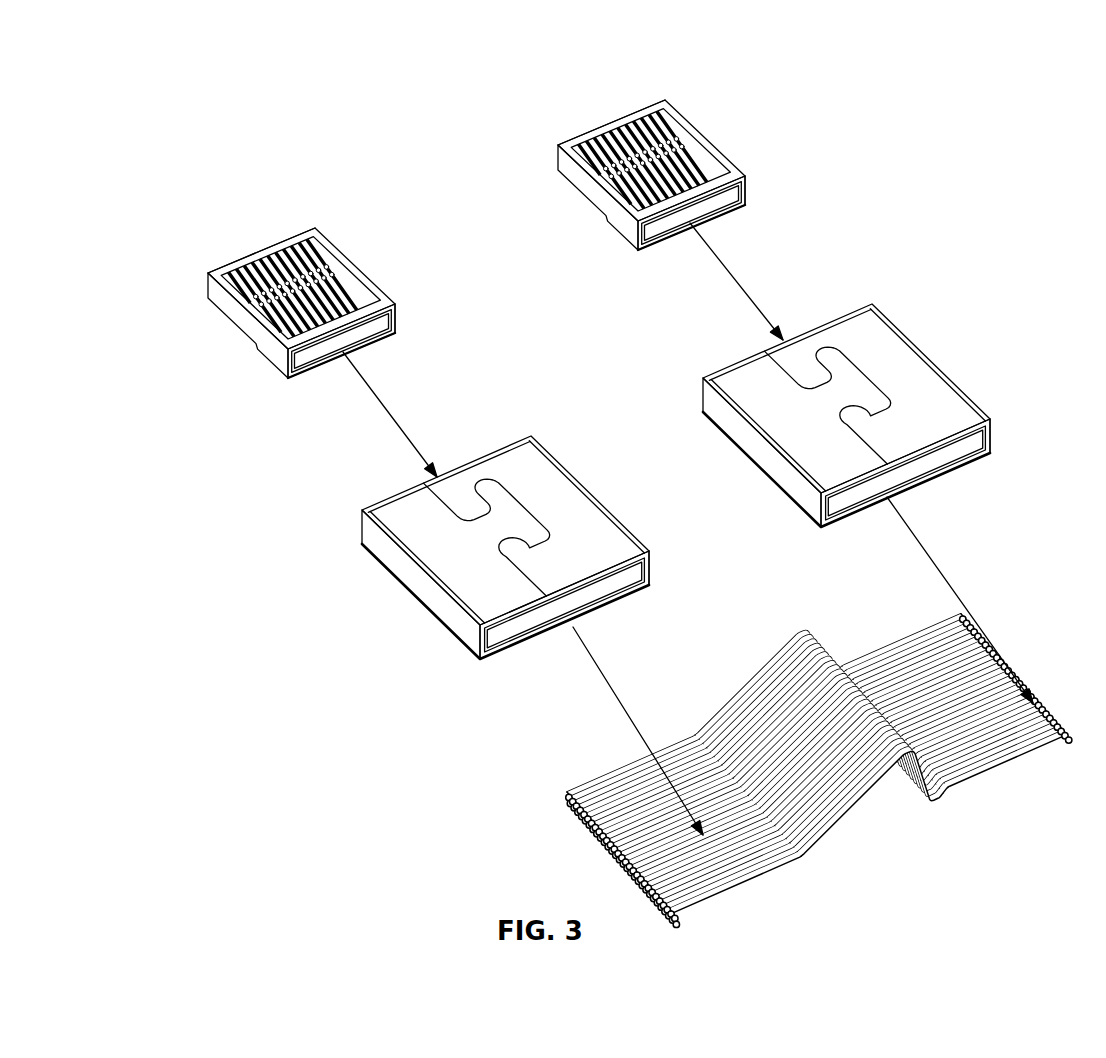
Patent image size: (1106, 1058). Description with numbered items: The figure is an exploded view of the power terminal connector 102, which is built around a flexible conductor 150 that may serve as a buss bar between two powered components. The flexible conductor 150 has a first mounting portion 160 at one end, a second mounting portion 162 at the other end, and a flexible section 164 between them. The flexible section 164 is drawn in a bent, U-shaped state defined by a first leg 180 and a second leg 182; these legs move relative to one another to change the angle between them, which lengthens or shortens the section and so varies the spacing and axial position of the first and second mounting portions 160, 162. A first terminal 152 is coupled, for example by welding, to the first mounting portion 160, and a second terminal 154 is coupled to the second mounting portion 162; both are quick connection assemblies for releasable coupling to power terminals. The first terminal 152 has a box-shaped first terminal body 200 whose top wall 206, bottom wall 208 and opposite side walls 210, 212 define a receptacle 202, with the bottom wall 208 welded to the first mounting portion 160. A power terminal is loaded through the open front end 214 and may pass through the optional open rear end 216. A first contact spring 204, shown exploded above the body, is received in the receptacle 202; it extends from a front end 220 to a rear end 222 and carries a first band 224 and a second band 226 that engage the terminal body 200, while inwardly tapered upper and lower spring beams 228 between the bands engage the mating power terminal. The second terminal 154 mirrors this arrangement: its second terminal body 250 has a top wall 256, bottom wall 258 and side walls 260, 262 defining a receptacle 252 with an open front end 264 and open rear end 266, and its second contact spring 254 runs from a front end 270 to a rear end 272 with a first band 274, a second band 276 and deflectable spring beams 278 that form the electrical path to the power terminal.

The power terminal connector 102 is at (580, 485).
The flexible conductor 150 is at (793, 755).
The first terminal 152 is at (436, 706).
The second terminal 154 is at (733, 72).
The first mounting portion 160 is at (588, 770).
The second mounting portion 162 is at (925, 622).
The flexible section 164 is at (758, 653).
The first leg 180 is at (886, 761).
The second leg 182 is at (907, 798).
The first terminal body 200 is at (497, 566).
The receptacle 202 is at (508, 636).
The first contact spring 204 is at (262, 352).
The top wall 206 is at (590, 553).
The bottom wall 208 is at (580, 622).
The side wall 210 is at (383, 577).
The side wall 212 is at (587, 492).
The open front end 214 is at (540, 632).
The open rear end 216 is at (395, 495).
The front end 220 is at (298, 300).
The rear end 222 is at (243, 258).
The first band 224 is at (380, 333).
The second band 226 is at (283, 245).
The spring beams 228 is at (337, 242).
The second terminal body 250 is at (831, 403).
The receptacle 252 is at (857, 503).
The second contact spring 254 is at (703, 143).
The top wall 256 is at (868, 302).
The bottom wall 258 is at (933, 483).
The side wall 260 is at (802, 508).
The side wall 262 is at (912, 324).
The open front end 264 is at (987, 442).
The open rear end 266 is at (797, 330).
The front end 270 is at (681, 149).
The rear end 272 is at (598, 127).
The first band 274 is at (720, 173).
The second band 276 is at (637, 118).
The spring beams 278 is at (660, 127).